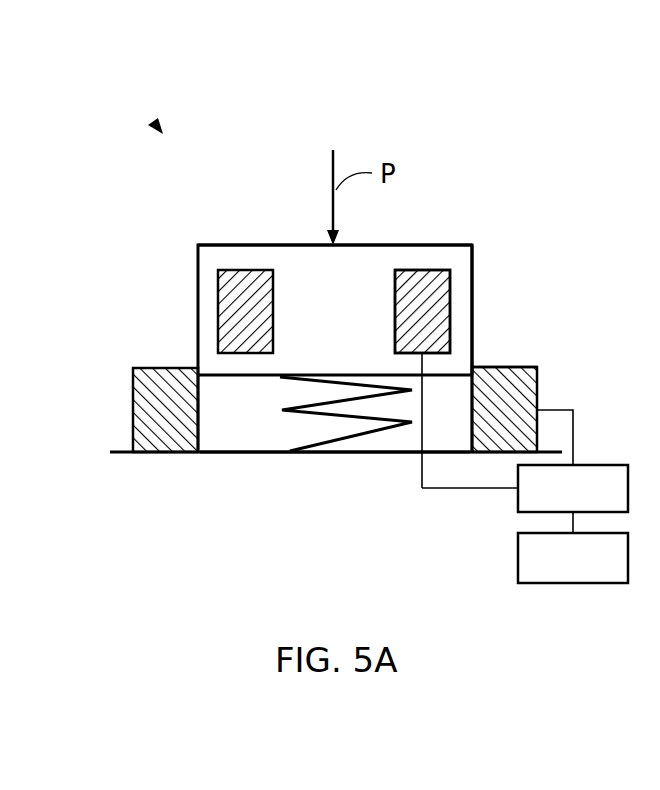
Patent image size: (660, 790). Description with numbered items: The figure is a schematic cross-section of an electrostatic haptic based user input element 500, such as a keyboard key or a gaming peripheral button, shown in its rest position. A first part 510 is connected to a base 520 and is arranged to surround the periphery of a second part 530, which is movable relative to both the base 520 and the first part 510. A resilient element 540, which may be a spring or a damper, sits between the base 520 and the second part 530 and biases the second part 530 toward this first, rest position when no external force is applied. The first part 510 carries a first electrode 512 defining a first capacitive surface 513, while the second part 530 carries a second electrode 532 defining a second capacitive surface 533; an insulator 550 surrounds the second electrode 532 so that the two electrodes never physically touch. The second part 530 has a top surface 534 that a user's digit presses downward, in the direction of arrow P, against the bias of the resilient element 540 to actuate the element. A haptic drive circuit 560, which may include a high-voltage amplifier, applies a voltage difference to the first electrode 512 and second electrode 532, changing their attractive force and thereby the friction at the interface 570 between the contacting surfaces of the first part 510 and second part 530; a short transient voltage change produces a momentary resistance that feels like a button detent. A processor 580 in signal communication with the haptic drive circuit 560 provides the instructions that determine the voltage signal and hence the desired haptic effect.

The user input element 500 is at (157, 122).
The first part 510 is at (118, 357).
The first electrode 512 is at (507, 367).
The first capacitive surface 513 is at (200, 405).
The base 520 is at (288, 455).
The second part 530 is at (186, 250).
The second electrode 532 is at (420, 277).
The second capacitive surface 533 is at (218, 302).
The top surface 534 is at (320, 243).
The resilient element 540 is at (397, 425).
The insulator 550 is at (463, 340).
The haptic drive circuit 560 is at (525, 461).
The interface 570 is at (200, 370).
The processor 580 is at (573, 547).